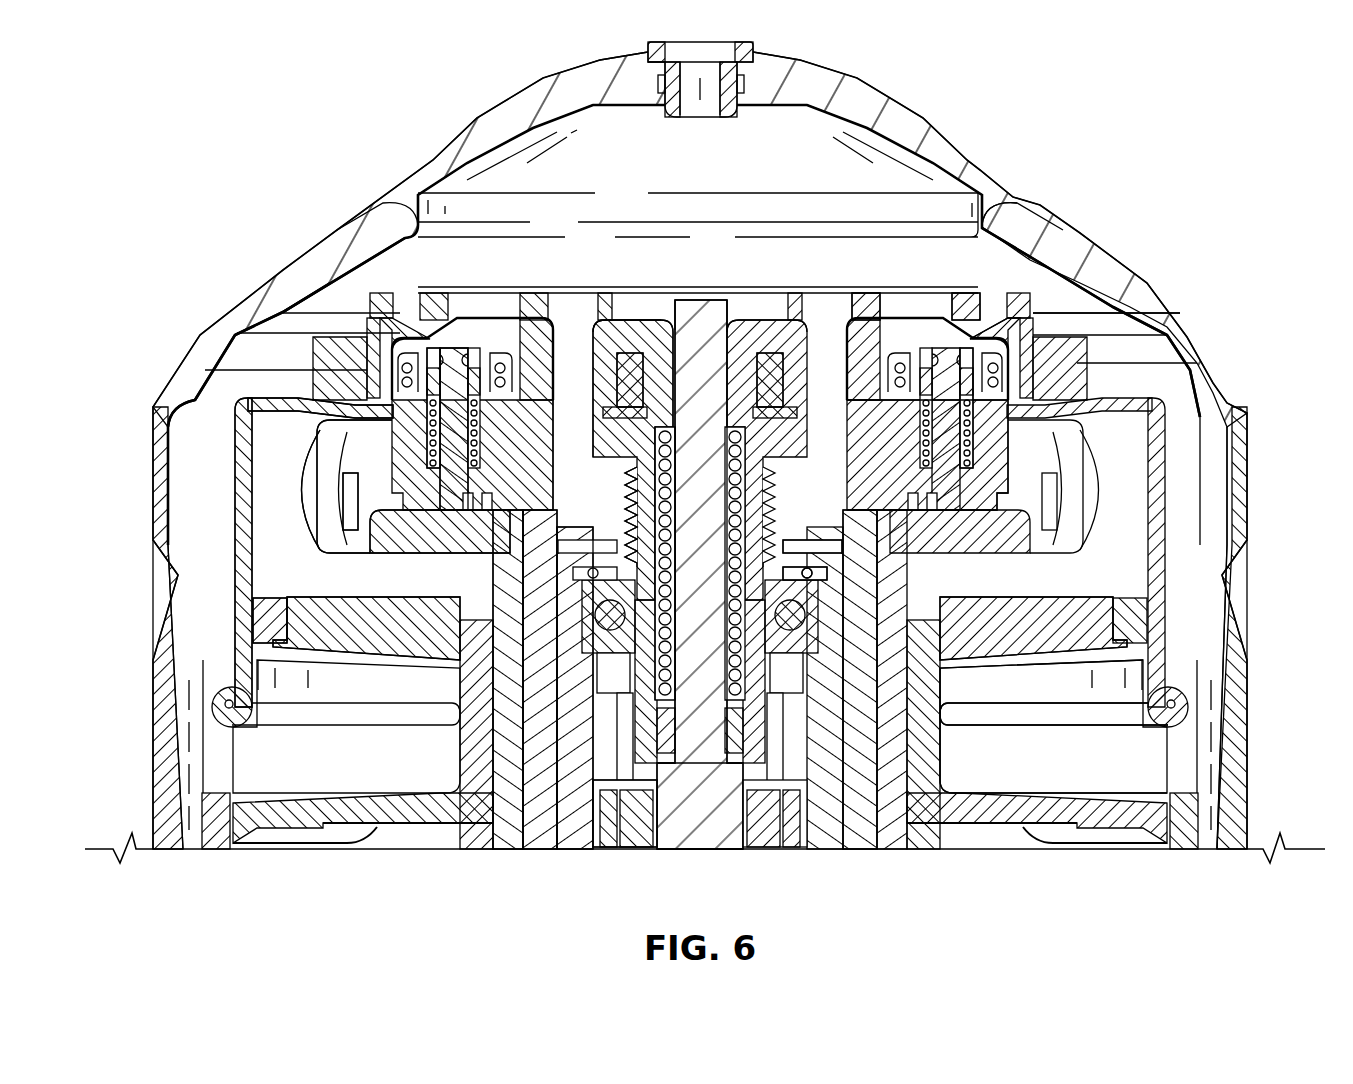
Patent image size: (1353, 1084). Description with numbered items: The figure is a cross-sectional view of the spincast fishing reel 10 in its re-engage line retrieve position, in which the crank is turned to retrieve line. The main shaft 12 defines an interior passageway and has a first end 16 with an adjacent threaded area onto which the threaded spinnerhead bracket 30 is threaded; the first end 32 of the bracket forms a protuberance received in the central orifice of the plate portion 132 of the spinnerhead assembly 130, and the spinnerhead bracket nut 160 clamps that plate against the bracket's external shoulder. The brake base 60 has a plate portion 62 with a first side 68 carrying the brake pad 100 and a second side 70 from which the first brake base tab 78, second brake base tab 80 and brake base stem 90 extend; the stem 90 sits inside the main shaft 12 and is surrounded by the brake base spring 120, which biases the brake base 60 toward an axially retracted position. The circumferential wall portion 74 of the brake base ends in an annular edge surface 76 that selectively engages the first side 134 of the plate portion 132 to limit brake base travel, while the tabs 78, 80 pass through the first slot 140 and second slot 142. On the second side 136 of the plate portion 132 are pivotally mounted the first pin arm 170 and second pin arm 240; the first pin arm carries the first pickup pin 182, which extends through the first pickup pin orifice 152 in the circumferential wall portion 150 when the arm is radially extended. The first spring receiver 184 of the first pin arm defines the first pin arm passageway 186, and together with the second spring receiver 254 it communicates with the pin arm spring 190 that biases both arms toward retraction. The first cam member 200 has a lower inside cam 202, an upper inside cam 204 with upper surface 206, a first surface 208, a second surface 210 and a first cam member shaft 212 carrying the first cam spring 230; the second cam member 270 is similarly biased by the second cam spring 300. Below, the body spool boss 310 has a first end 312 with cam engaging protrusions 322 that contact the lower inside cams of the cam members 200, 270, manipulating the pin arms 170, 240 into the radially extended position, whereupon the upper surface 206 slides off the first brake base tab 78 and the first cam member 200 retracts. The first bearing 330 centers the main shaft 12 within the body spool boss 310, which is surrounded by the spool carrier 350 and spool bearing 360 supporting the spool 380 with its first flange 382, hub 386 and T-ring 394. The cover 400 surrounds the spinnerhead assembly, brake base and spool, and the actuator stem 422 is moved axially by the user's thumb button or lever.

The fishing reel 10 is at (263, 124).
The main shaft 12 is at (738, 850).
The first end 16 is at (750, 346).
The threaded spinnerhead bracket 30 is at (755, 362).
The first end 32 is at (705, 392).
The brake base 60 is at (700, 294).
The plate portion 62 is at (663, 318).
The first side 68 is at (598, 318).
The second side 70 is at (522, 345).
The circumferential wall portion 74 is at (1043, 345).
The annular edge surface 76 is at (1060, 447).
The first brake base tab 78 is at (590, 432).
The second brake base tab 80 is at (805, 432).
The brake base stem 90 is at (713, 556).
The brake pad 100 is at (1023, 363).
The brake base spring 120 is at (688, 583).
The spinnerhead assembly 130 is at (188, 464).
The plate portion 132 is at (287, 397).
The first side 134 is at (228, 365).
The second side 136 is at (207, 440).
The first slot 140 is at (392, 335).
The second slot 142 is at (1030, 345).
The circumferential wall portion 150 is at (203, 610).
The first pickup pin orifice 152 is at (313, 547).
The spinnerhead bracket nut 160 is at (812, 330).
The first pin arm 170 is at (380, 504).
The first pickup pin 182 is at (297, 473).
The first spring receiver 184 is at (468, 365).
The first pin arm passageway 186 is at (333, 302).
The pin arm spring 190 is at (350, 280).
The first cam member 200 is at (528, 595).
The lower inside cam 202 is at (450, 560).
The upper inside cam 204 is at (655, 425).
The upper surface 206 is at (627, 345).
The first surface 208 is at (365, 553).
The second surface 210 is at (357, 580).
The first cam member shaft 212 is at (452, 348).
The first cam spring 230 is at (427, 444).
The second pin arm 240 is at (1019, 500).
The second spring receiver 254 is at (893, 330).
The second cam member 270 is at (954, 536).
The second cam spring 300 is at (970, 443).
The body spool boss 310 is at (792, 740).
The first end 312 is at (830, 578).
The cam engaging protrusions 322 is at (830, 540).
The first bearing 330 is at (580, 650).
The spool carrier 350 is at (546, 850).
The spool bearing 360 is at (500, 850).
The spool 380 is at (964, 745).
The first flange 382 is at (1043, 625).
The hub 386 is at (933, 693).
The T-ring 394 is at (1170, 575).
The cover 400 is at (1195, 350).
The actuator stem 422 is at (678, 850).